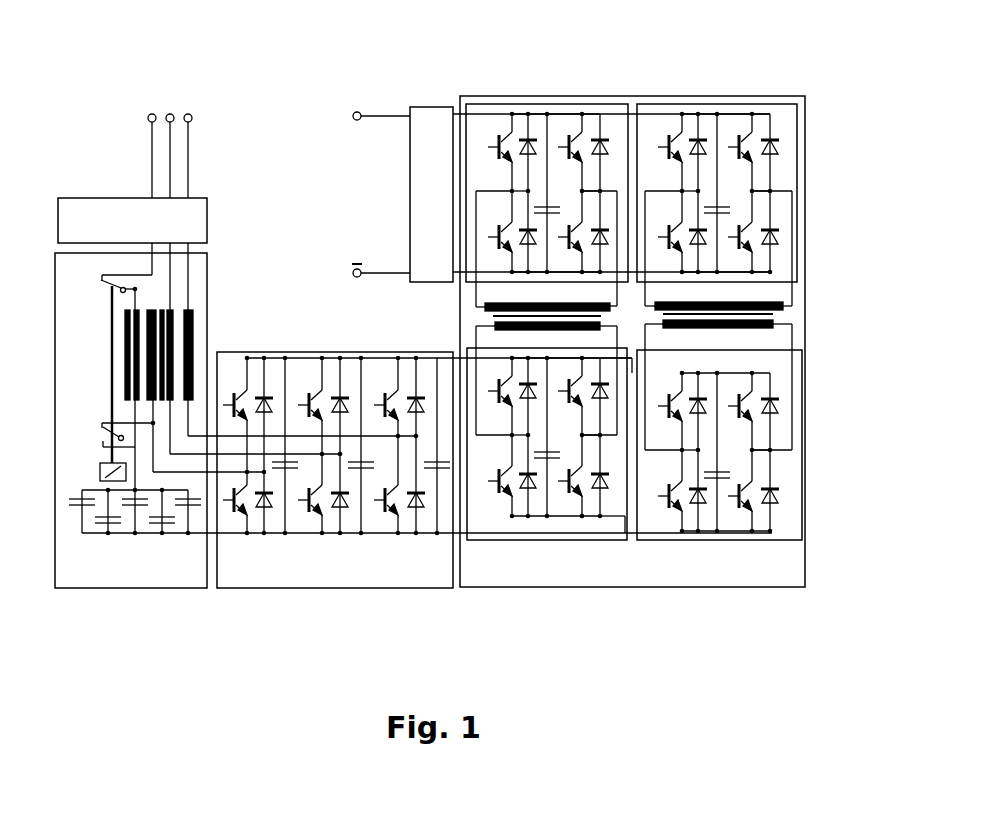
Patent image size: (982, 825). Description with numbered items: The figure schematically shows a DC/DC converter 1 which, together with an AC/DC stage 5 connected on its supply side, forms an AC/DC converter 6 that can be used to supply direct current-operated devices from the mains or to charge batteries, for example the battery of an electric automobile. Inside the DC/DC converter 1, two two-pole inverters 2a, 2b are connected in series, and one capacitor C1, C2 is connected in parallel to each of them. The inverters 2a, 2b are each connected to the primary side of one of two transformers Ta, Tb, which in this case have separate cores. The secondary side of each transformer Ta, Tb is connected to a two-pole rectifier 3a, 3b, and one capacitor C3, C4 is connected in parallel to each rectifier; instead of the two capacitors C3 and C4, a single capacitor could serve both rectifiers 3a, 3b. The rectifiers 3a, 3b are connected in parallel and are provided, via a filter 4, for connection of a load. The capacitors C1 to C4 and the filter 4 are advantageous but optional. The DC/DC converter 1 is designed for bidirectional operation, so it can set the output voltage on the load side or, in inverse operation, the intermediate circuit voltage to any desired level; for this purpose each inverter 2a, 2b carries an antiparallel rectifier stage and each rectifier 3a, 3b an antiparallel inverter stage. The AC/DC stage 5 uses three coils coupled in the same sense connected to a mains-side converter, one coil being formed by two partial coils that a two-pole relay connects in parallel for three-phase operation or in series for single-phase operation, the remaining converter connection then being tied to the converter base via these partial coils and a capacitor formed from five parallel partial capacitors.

The DC/DC converter 1 is at (712, 572).
The two-pole inverter 2a is at (547, 454).
The two-pole inverter 2b is at (703, 453).
The two-pole rectifier 3a is at (547, 182).
The two-pole rectifier 3b is at (717, 181).
The filter 4 is at (401, 170).
The AC/DC stage 5 is at (55, 595).
The AC/DC converter 6 is at (262, 83).
The transformer Ta is at (477, 317).
The transformer Tb is at (781, 316).
The capacitor C1 is at (556, 439).
The capacitor C2 is at (726, 458).
The capacitor C3 is at (555, 194).
The capacitor C4 is at (725, 194).